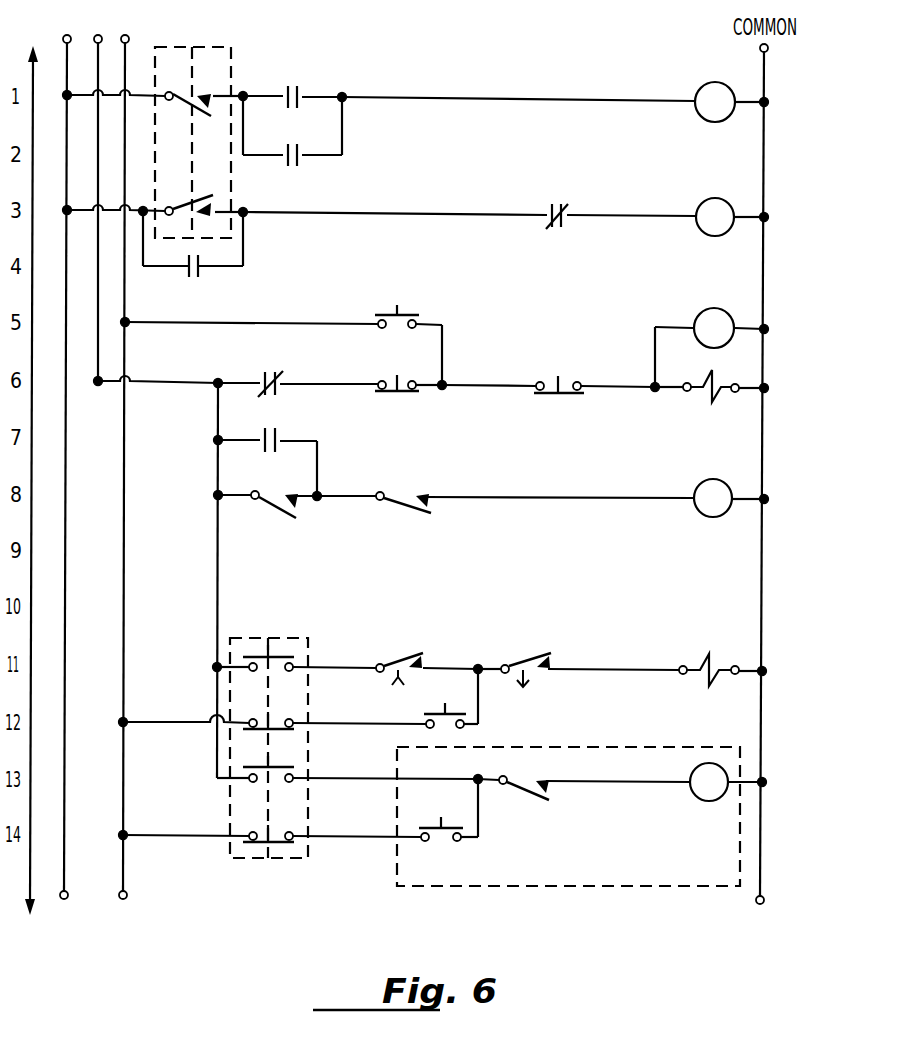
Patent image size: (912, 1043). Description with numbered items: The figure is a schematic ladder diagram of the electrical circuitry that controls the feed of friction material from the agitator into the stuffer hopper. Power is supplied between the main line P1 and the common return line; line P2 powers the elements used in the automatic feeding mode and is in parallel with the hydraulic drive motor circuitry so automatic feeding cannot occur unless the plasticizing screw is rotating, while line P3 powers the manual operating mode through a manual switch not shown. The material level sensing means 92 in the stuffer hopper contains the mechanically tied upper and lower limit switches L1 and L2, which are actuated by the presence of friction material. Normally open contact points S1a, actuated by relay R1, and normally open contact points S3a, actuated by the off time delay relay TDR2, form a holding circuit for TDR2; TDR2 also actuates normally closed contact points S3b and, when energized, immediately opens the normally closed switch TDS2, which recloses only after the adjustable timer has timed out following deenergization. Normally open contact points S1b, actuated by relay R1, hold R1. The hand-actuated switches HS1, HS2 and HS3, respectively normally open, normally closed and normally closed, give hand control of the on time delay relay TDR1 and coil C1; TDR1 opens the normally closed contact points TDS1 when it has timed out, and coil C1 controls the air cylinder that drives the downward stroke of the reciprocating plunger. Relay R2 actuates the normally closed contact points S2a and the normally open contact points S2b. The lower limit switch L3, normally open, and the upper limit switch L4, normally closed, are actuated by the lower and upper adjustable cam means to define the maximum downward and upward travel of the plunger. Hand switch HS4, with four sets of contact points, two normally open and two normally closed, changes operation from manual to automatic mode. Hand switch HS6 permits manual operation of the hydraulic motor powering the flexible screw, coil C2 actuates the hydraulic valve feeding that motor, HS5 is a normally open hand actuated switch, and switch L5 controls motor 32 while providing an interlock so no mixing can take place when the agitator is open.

The material level sensing means 92 is at (196, 125).
The motor 32 is at (709, 782).
The main electrical power line P1 is at (66, 453).
The automatic mode power line P2 is at (97, 194).
The manual mode power line P3 is at (125, 453).
The upper limit switch L1 is at (188, 90).
The lower limit switch L2 is at (189, 218).
The lower limit switch L3 is at (274, 521).
The upper limit switch L4 is at (403, 521).
The switch L5 is at (524, 800).
The normally open contact points S1a is at (293, 83).
The normally open contact points S3a is at (292, 148).
The normally open contact points S1b is at (193, 256).
The normally closed contact points S3b is at (558, 203).
The normally closed contact points S2a is at (272, 369).
The normally open contact points S2b is at (268, 464).
The on time delay relay TDR1 is at (713, 313).
The off time delay relay TDR2 is at (714, 90).
The relay R1 is at (715, 217).
The relay R2 is at (713, 498).
The coil C1 is at (711, 400).
The coil C2 is at (709, 657).
The hand-actuated switch HS1 is at (397, 302).
The hand-actuated switch HS2 is at (397, 397).
The hand-actuated switch HS3 is at (559, 398).
The hand switch HS4 is at (269, 733).
The hand actuated switch HS5 is at (441, 845).
The hand switch HS6 is at (445, 702).
The normally closed contact points TDS1 is at (399, 657).
The normally closed switch TDS2 is at (526, 658).